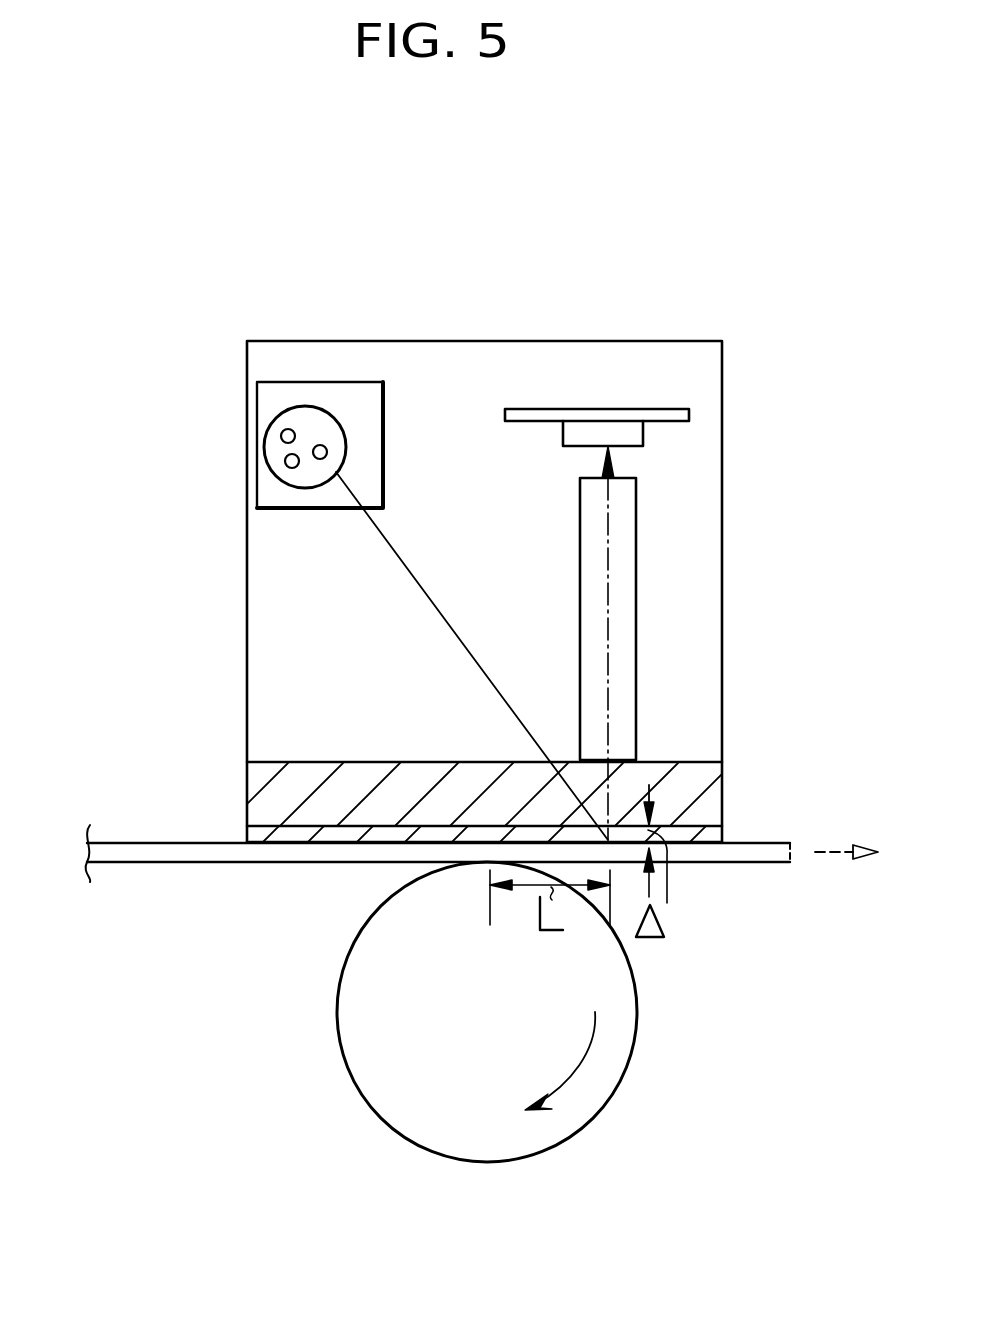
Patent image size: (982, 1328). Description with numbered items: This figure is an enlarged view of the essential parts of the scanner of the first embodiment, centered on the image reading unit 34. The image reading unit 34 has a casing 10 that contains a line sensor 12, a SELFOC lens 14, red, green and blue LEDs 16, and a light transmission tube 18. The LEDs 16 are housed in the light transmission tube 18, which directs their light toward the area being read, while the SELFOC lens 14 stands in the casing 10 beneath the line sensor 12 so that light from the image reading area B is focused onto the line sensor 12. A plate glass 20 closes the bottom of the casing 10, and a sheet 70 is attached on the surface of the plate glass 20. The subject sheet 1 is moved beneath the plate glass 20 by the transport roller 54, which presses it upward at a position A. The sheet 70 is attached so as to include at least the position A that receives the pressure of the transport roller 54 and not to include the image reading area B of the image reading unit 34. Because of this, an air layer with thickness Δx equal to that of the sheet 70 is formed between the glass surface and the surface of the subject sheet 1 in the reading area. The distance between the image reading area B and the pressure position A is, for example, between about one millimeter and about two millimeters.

The image reading unit 34 is at (664, 272).
The casing 10 is at (722, 507).
The light transmission tube 18 is at (314, 423).
The red, green and blue LEDs 16 is at (315, 458).
The line sensor 12 is at (644, 431).
The SELFOC lens 14 is at (637, 646).
The plate glass 20 is at (706, 806).
The sheet 70 is at (248, 832).
The recording paper 1 is at (155, 864).
The transport roller 54 is at (636, 1023).